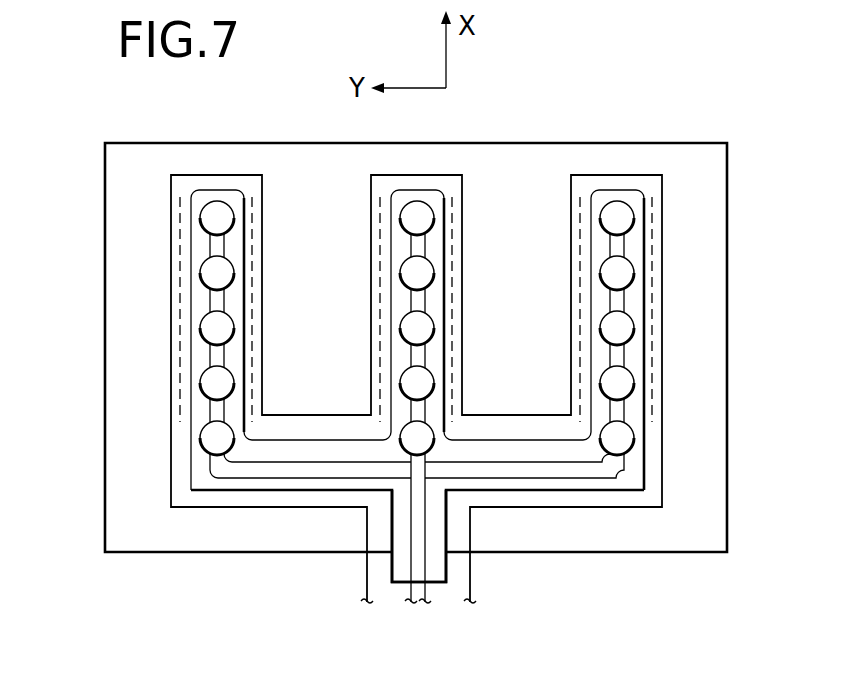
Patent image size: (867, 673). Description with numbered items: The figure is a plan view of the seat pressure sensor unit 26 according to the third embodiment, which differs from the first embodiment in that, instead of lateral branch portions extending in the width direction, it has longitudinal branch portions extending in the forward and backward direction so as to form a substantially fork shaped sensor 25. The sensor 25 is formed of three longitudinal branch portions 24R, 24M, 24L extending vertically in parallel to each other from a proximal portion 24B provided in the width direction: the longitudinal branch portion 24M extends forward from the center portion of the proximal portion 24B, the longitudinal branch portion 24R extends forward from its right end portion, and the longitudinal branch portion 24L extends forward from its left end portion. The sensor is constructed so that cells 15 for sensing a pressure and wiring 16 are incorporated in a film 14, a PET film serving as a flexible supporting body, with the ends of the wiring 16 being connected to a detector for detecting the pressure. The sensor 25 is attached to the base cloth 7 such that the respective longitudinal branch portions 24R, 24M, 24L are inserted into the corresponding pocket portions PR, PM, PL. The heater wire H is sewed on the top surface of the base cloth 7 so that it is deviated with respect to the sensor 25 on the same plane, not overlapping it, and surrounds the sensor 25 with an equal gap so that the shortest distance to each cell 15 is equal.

The base cloth 7 is at (547, 141).
The film 14 is at (390, 530).
The cells 15 is at (227, 236).
The wiring 16 is at (426, 594).
The longitudinal branch portion 24L is at (216, 190).
The longitudinal branch portion 24M is at (413, 190).
The longitudinal branch portion 24R is at (612, 190).
The proximal portion 24B is at (523, 453).
The sensor 25 is at (184, 290).
The pressure sensor unit 26 is at (310, 137).
The pocket portion PL is at (174, 194).
The pocket portion PM is at (462, 194).
The pocket portion PR is at (660, 194).
The heater wire H is at (364, 600).